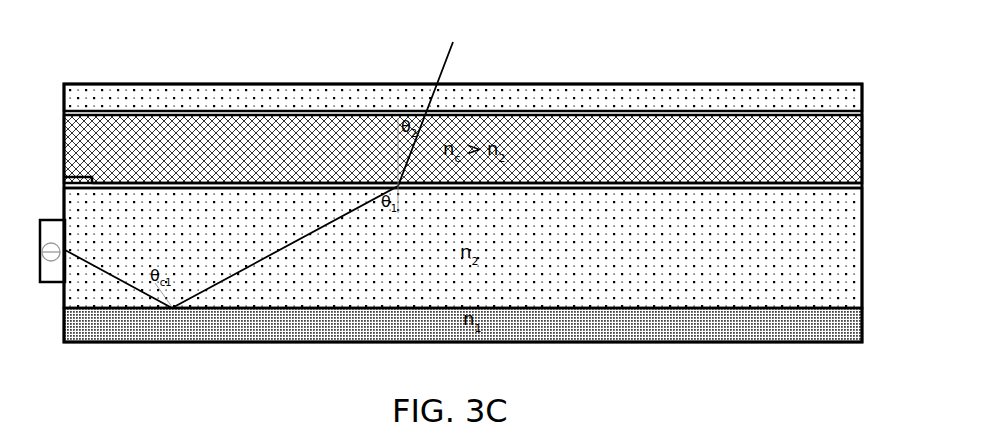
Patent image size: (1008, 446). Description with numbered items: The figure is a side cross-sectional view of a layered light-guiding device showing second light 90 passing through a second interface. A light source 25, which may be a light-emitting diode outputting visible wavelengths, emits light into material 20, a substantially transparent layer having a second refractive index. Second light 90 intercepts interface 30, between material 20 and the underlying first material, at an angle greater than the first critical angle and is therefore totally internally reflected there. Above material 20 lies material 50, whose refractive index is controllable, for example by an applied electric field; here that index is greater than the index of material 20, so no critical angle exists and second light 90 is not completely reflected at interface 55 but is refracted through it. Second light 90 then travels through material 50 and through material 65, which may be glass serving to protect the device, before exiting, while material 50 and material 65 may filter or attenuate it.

The material 65 is at (855, 100).
The material 50 is at (857, 142).
The interface 55 is at (858, 182).
The material 20 is at (855, 252).
The interface 30 is at (855, 308).
The light source 25 is at (58, 282).
The second light 90 is at (98, 261).